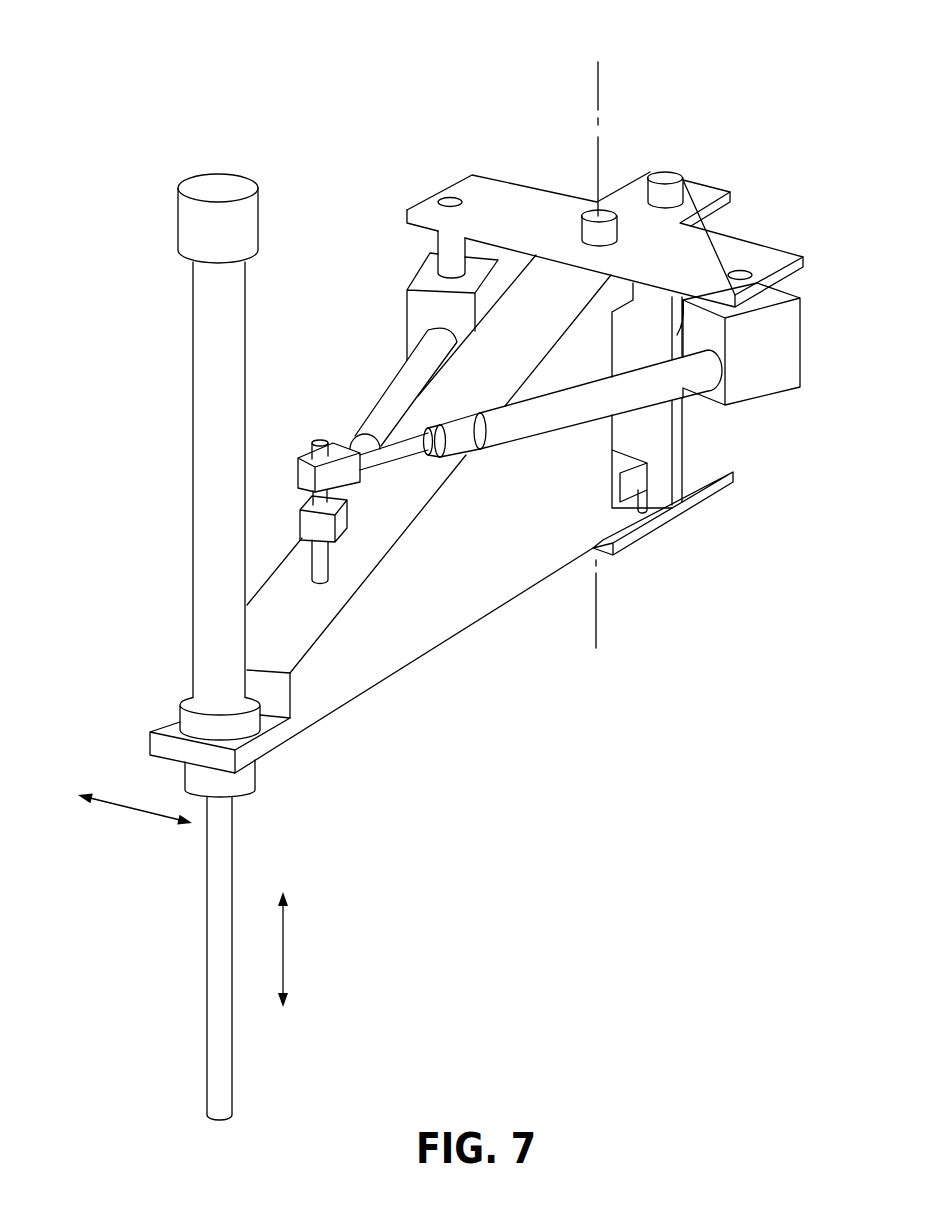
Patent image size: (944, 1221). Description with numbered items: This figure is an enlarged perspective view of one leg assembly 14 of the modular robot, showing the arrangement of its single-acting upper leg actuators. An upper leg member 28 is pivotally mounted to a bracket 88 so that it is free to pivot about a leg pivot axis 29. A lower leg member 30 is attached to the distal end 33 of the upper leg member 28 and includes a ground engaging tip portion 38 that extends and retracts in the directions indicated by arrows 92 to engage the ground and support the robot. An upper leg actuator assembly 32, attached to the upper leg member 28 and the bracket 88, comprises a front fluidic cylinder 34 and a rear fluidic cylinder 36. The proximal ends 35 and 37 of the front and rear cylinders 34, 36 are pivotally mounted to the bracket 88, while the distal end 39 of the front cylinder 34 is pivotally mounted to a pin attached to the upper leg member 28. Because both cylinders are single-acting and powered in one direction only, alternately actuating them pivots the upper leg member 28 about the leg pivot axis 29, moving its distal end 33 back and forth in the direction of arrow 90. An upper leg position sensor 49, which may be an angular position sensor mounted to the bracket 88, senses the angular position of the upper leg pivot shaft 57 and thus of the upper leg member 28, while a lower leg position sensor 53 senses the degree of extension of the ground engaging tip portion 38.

The leg assembly 14 is at (255, 80).
The upper leg member 28 is at (443, 648).
The leg pivot axis 29 is at (597, 123).
The lower leg member 30 is at (192, 303).
The upper leg actuator assembly 32 is at (341, 420).
The distal end 33 is at (312, 736).
The front fluidic cylinder 34 is at (501, 444).
The proximal end 35 is at (803, 336).
The rear fluidic cylinder 36 is at (390, 377).
The proximal end 37 is at (417, 275).
The ground engaging tip portion 38 is at (236, 1096).
The distal end 39 is at (297, 458).
The upper leg position sensor 49 is at (633, 455).
The lower leg position sensor 53 is at (260, 793).
The upper leg pivot shaft 57 is at (598, 563).
The bracket 88 is at (746, 238).
The arrow 90 is at (148, 812).
The arrow 92 is at (285, 966).